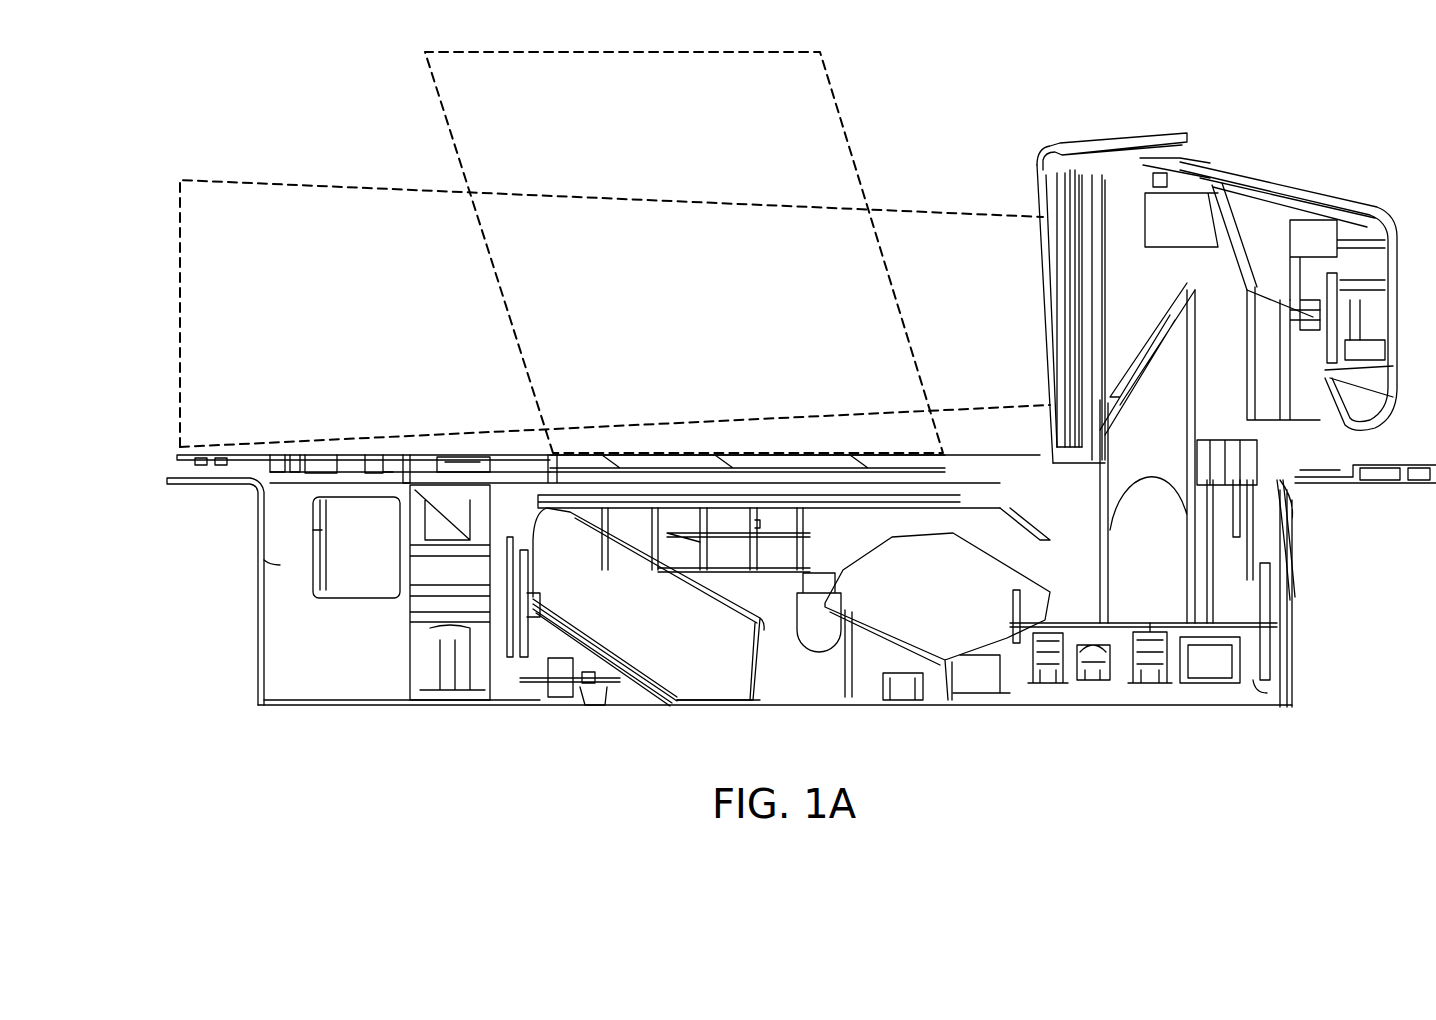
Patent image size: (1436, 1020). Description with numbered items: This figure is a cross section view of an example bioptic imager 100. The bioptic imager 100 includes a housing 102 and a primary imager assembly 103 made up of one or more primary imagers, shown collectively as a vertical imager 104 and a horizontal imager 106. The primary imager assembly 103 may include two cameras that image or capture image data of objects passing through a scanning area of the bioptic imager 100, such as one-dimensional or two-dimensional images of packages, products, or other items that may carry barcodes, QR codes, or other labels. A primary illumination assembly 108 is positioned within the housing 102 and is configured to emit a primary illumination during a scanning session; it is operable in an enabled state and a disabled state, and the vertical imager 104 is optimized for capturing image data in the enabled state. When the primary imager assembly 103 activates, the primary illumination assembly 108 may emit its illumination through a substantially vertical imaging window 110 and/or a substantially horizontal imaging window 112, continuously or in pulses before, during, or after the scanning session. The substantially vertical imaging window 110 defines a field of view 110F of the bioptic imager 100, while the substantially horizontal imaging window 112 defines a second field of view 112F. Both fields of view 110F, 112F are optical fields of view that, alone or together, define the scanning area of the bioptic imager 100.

The bioptic imager 100 is at (158, 368).
The housing 102 is at (1343, 197).
The primary imager assembly 103 is at (1097, 682).
The vertical imager 104 is at (1167, 690).
The horizontal imager 106 is at (1053, 685).
The primary illumination assembly 108 is at (1187, 210).
The substantially vertical imaging window 110 is at (1046, 290).
The field of view 110F is at (315, 185).
The substantially horizontal imaging window 112 is at (795, 455).
The second field of view 112F is at (847, 141).